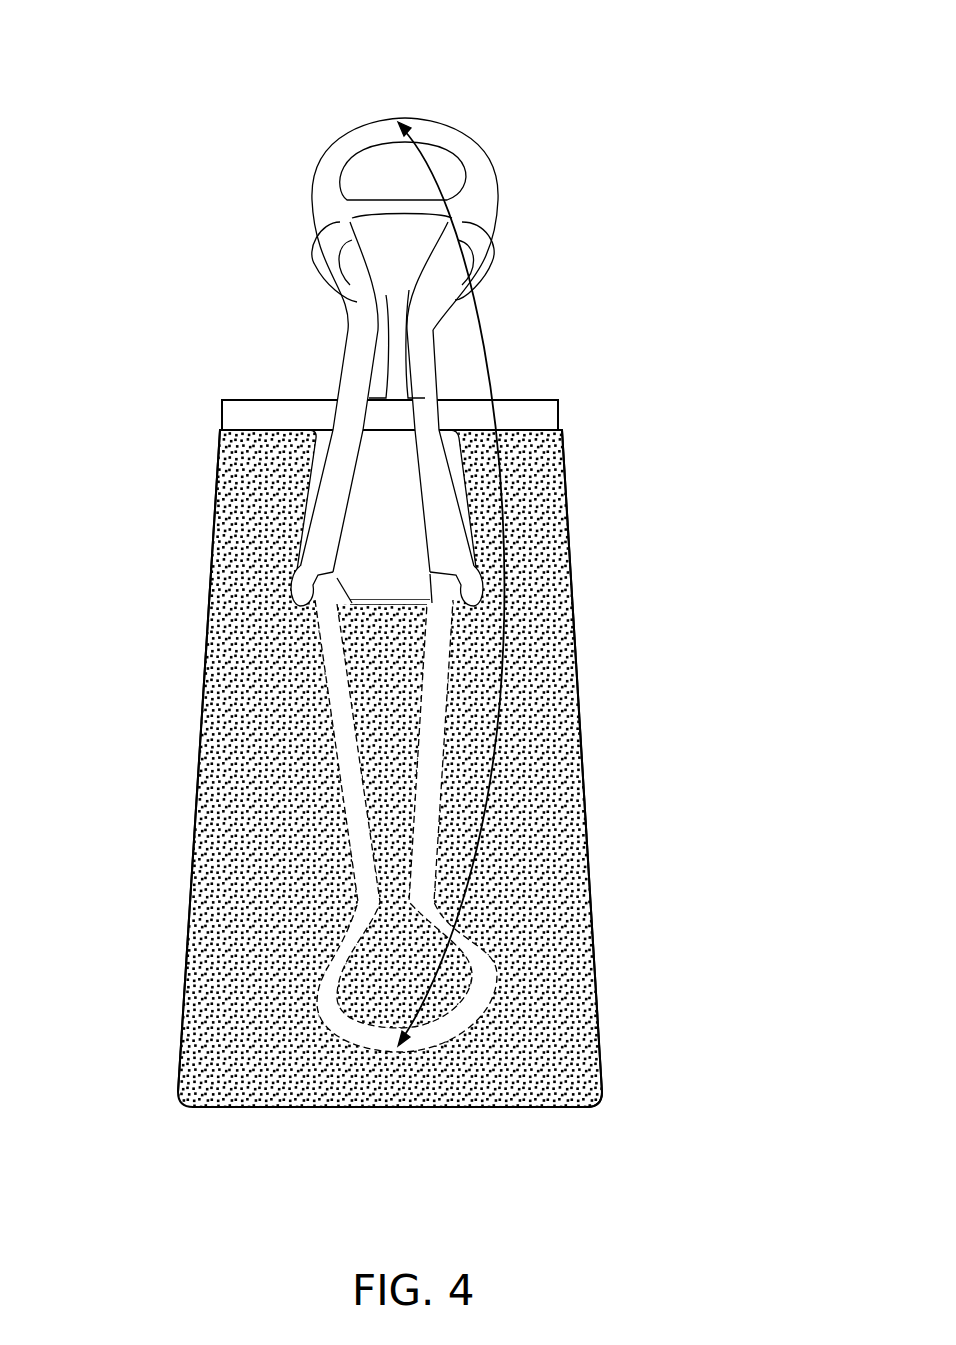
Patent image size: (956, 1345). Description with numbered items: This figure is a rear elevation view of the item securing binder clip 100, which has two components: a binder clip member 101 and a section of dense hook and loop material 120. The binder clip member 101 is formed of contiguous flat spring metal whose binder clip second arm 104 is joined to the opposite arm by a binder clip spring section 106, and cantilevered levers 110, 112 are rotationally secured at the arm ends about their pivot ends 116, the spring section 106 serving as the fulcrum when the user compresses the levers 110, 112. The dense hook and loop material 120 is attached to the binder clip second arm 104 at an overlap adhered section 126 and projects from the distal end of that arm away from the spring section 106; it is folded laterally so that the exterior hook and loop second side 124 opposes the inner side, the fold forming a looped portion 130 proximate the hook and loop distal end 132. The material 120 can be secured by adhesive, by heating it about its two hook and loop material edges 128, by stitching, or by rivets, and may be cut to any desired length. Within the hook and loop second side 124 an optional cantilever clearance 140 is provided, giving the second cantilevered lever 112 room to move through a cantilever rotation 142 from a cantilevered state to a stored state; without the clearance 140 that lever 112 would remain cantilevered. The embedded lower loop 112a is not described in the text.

The item securing binder clip 100 is at (468, 87).
The binder clip member 101 is at (555, 242).
The binder clip second arm 104 is at (535, 415).
The binder clip spring section 106 is at (282, 398).
The cantilevered lever 110 is at (330, 244).
The cantilevered lever 112 is at (480, 172).
The embedded lower loop 112a is at (357, 1030).
The pivot end 116 is at (462, 592).
The dense hook and loop material 120 is at (530, 790).
The hook and loop second side 124 is at (548, 861).
The overlap adhered section 126 is at (250, 508).
The hook and loop material edges 128 is at (196, 925).
The looped portion 130 is at (575, 1090).
The hook and loop distal end 132 is at (398, 1106).
The cantilever clearance 140 is at (455, 525).
The cantilever rotation 142 is at (480, 340).